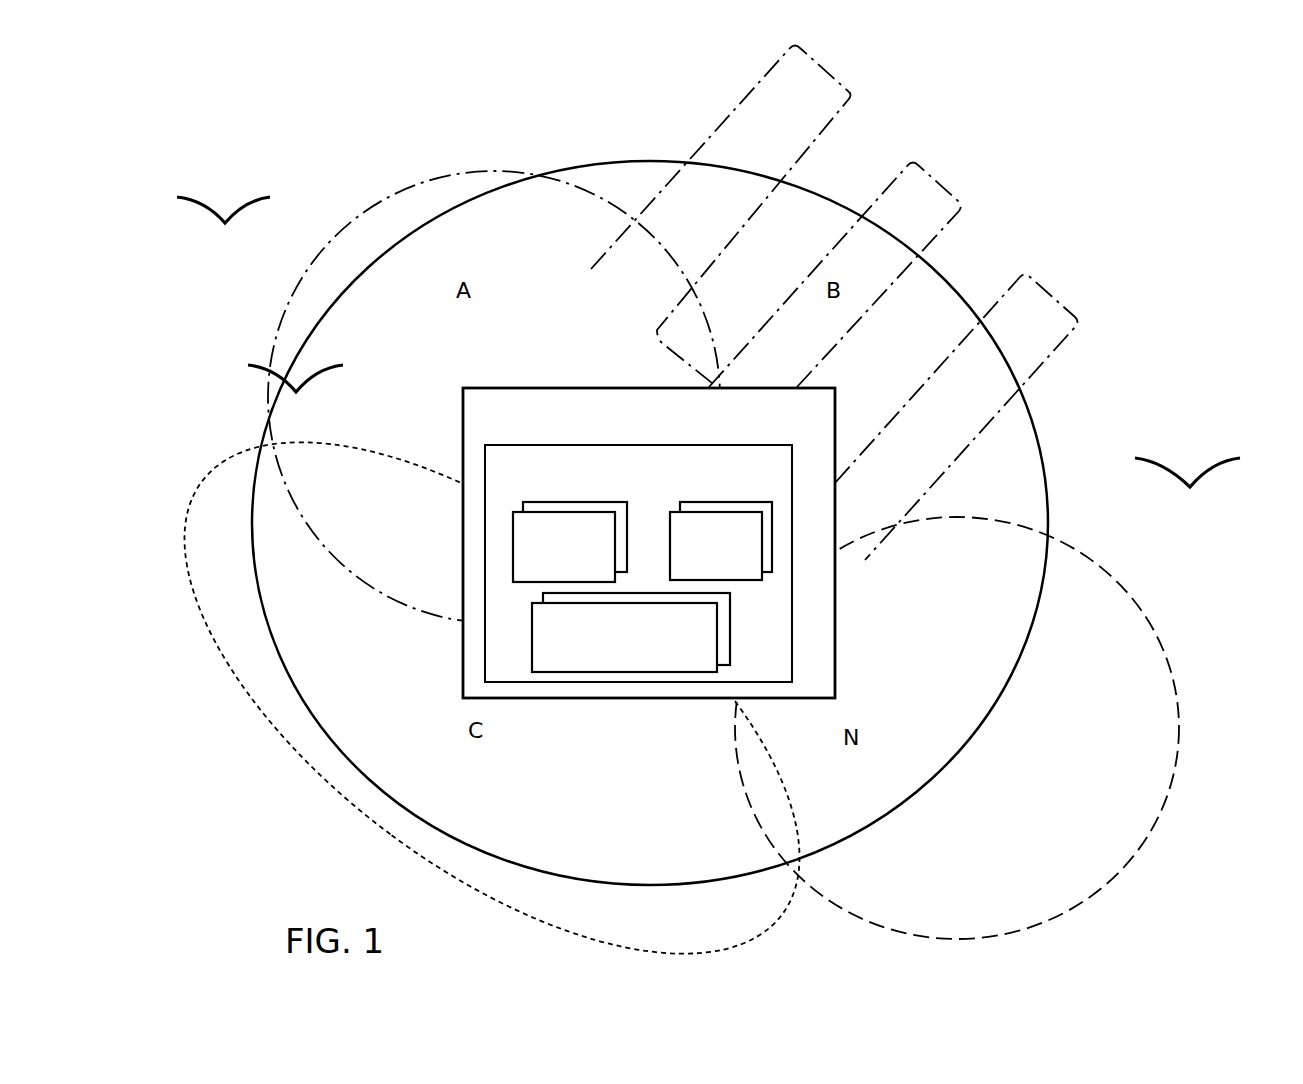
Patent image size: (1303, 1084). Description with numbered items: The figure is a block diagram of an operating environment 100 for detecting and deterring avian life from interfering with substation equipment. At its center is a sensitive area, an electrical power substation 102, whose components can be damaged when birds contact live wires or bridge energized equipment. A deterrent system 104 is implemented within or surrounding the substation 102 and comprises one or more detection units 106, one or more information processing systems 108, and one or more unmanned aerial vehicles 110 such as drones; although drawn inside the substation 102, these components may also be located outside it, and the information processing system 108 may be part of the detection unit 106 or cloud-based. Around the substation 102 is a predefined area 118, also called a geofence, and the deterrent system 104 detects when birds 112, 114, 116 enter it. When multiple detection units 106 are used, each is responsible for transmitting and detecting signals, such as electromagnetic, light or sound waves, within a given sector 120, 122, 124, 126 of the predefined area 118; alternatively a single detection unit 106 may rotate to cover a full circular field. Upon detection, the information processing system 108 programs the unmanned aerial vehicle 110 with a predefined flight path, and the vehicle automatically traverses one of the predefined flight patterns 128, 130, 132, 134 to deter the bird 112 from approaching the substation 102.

The operating environment 100 is at (1166, 169).
The electrical power substation 102 is at (837, 667).
The deterrent system 104 is at (558, 683).
The detection unit 106 is at (518, 507).
The information processing system 108 is at (637, 673).
The unmanned aerial vehicle 110 is at (745, 582).
The bird 112 is at (320, 378).
The bird 114 is at (193, 203).
The bird 116 is at (1183, 470).
The predefined area 118 is at (1043, 424).
The sector 120 is at (523, 213).
The sector 122 is at (622, 190).
The sector 124 is at (323, 712).
The sector 126 is at (983, 682).
The predefined flight pattern 128 is at (383, 204).
The predefined flight pattern 130 is at (938, 181).
The predefined flight pattern 132 is at (329, 797).
The predefined flight pattern 134 is at (1165, 655).